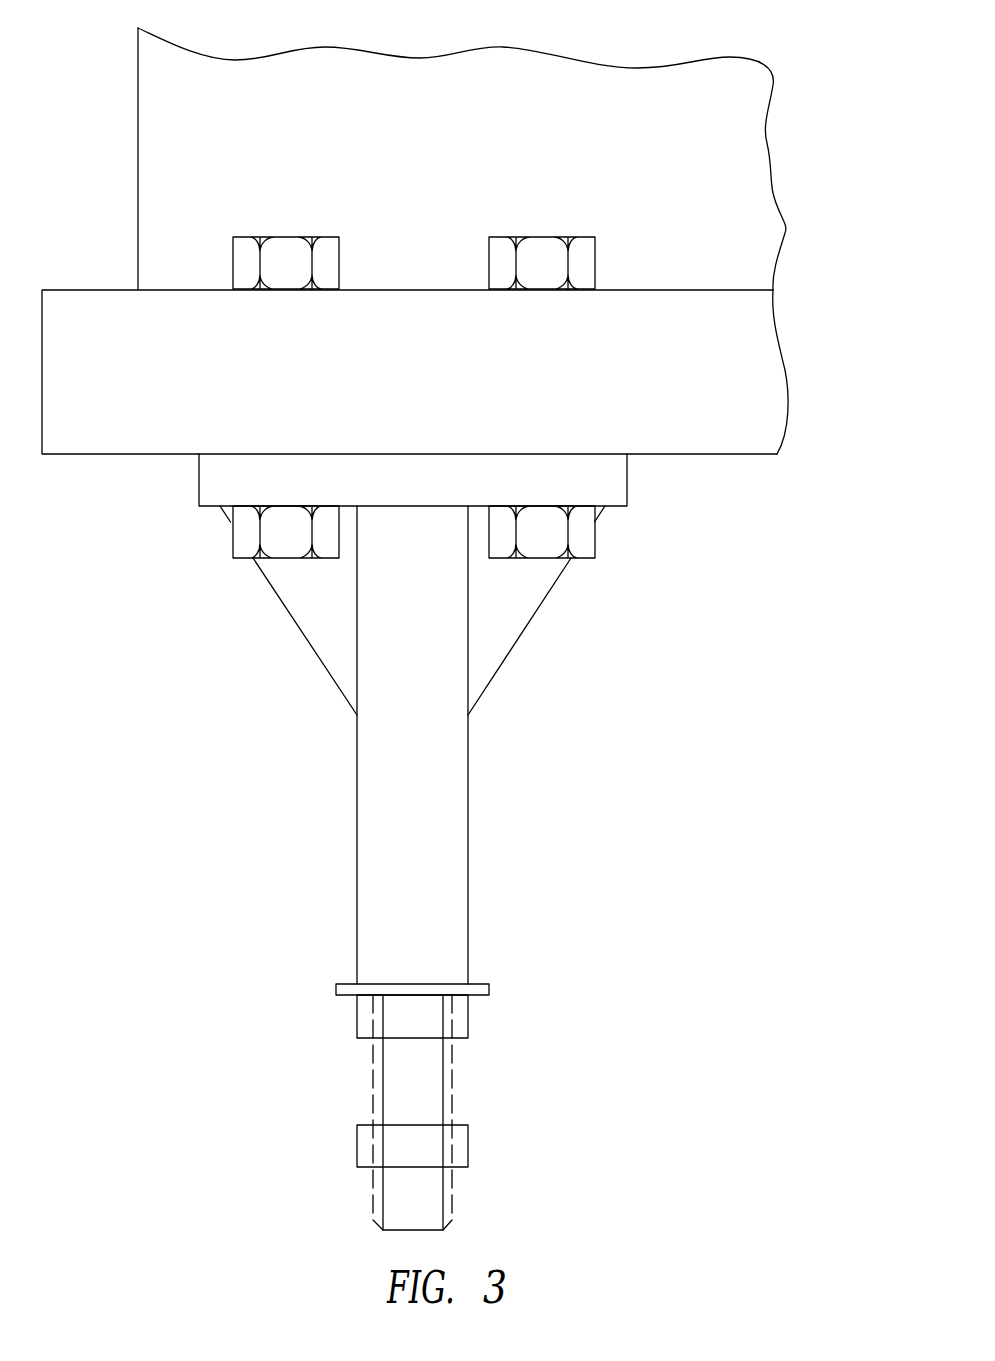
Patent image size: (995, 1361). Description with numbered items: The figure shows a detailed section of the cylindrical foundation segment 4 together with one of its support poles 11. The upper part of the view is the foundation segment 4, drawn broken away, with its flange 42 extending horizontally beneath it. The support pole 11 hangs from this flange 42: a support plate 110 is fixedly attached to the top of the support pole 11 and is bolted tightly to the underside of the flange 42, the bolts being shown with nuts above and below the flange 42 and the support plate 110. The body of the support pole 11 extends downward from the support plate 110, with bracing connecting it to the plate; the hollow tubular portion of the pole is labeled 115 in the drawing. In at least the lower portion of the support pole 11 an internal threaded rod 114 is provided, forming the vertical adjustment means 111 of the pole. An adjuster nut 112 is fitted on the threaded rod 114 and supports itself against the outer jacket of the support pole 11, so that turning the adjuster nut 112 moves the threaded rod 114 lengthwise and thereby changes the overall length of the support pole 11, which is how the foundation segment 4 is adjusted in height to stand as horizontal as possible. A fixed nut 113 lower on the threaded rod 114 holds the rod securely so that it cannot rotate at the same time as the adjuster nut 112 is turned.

The foundation segment 4 is at (526, 62).
The flange 42 is at (763, 368).
The support plate 110 is at (613, 487).
The support pole 11 is at (435, 868).
The tubular post 115 is at (383, 811).
The adjuster nut 112 is at (365, 1015).
The vertical adjustment means 111 is at (423, 1085).
The fixed nut 113 is at (365, 1147).
The internal threaded rod 114 is at (417, 1193).